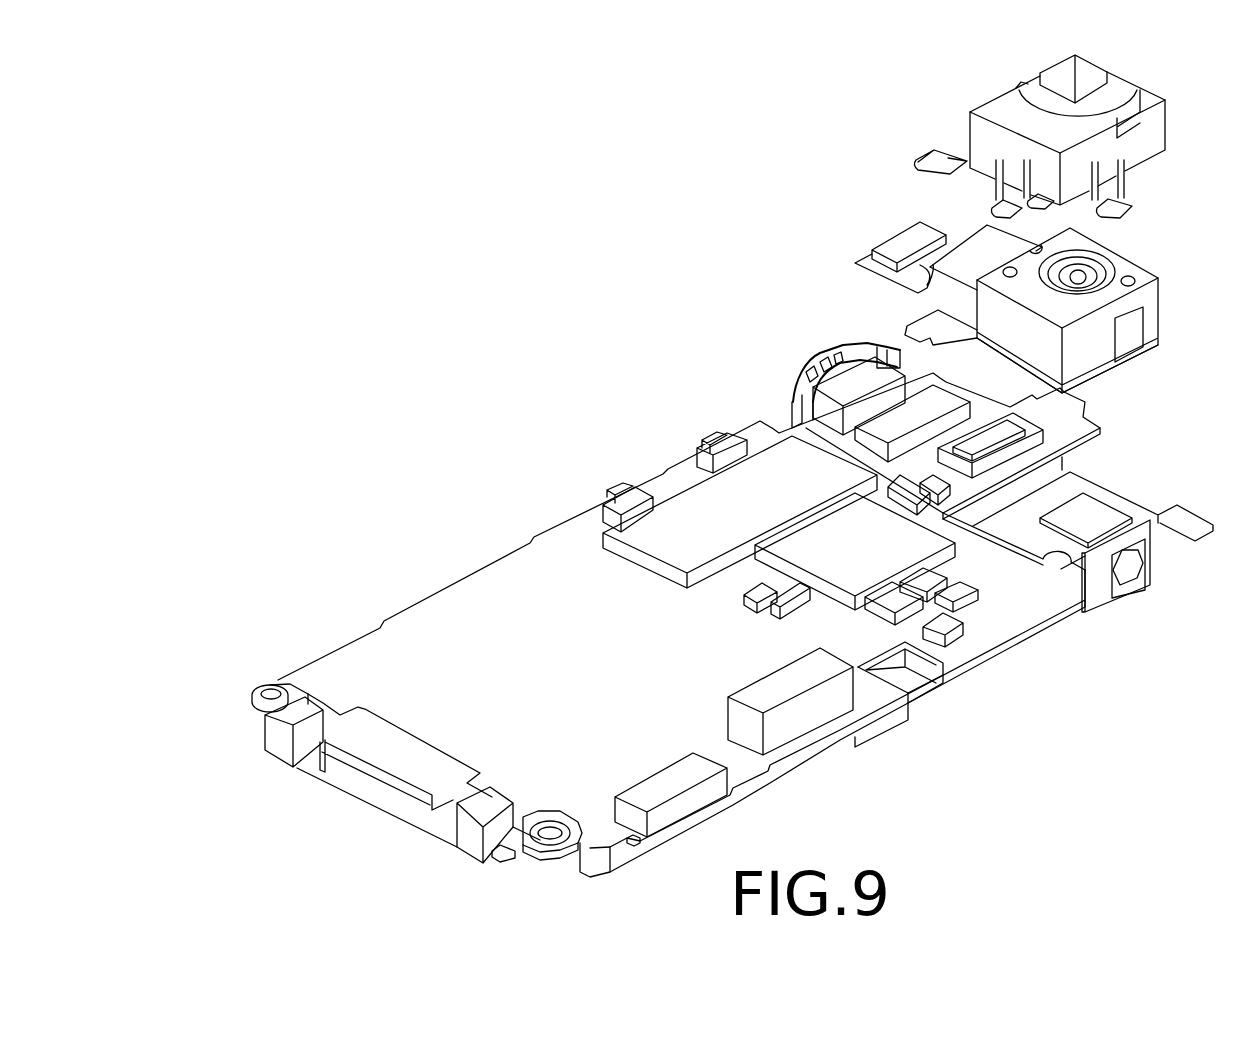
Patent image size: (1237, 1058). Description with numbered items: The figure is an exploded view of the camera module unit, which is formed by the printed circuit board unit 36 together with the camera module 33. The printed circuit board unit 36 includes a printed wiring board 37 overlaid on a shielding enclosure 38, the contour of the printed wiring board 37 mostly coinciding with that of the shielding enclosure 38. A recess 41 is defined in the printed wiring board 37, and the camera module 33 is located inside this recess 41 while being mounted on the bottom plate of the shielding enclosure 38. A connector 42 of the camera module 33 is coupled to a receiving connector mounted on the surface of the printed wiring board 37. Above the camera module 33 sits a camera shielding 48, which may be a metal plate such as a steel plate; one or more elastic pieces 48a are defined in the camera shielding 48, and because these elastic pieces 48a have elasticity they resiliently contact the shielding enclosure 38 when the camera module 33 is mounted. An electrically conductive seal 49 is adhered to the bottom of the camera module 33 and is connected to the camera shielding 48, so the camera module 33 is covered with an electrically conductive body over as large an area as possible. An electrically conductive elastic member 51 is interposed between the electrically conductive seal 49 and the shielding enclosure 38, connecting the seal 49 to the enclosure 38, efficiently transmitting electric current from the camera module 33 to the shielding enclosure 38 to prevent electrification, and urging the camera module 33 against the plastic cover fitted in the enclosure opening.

The camera module 33 is at (1143, 265).
The printed circuit board unit 36 is at (277, 620).
The printed wiring board 37 is at (455, 592).
The shielding enclosure 38 is at (1005, 645).
The recess 41 is at (1087, 577).
The connector 42 is at (885, 247).
The camera shielding 48 is at (1152, 92).
The elastic pieces 48a is at (1155, 188).
The electrically conductive seal 49 is at (1135, 360).
The electrically conductive elastic member 51 is at (1098, 493).